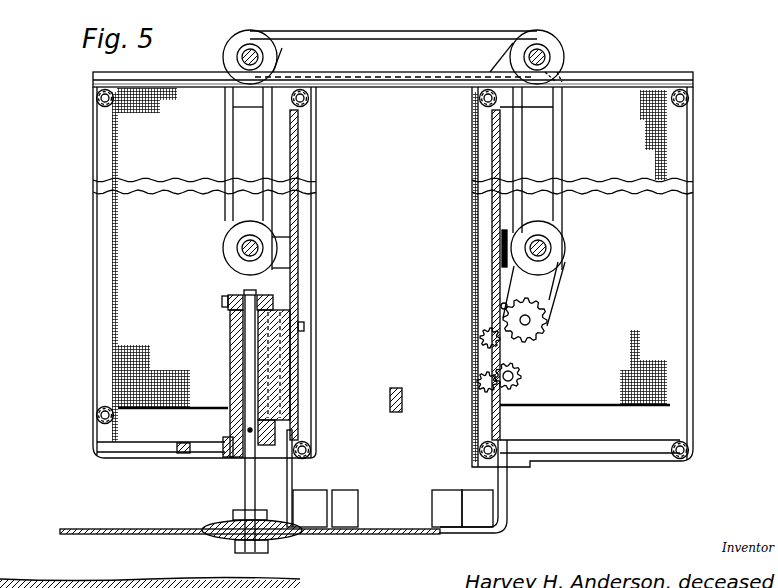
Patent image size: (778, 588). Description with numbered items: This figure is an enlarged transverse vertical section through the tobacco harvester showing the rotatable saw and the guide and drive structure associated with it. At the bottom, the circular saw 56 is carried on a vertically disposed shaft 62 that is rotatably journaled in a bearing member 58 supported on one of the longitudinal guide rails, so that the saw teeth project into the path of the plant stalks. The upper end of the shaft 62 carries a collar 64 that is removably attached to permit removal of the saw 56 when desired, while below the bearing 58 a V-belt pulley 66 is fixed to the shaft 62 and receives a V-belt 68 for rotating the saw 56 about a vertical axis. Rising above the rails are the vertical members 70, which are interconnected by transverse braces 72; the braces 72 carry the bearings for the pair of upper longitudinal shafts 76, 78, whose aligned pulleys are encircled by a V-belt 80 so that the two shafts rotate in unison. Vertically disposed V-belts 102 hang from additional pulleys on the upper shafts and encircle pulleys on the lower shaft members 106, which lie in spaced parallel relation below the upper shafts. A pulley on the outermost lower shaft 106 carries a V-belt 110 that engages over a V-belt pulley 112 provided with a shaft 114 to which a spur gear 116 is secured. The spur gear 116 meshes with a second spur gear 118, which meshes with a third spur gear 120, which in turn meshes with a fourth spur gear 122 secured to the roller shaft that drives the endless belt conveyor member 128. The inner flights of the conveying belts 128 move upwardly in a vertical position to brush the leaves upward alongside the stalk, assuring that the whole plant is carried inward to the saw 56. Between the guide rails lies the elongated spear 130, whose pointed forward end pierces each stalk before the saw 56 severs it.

The circular saw 56 is at (381, 534).
The bearing member 58 is at (237, 382).
The vertically disposed shaft 62 is at (247, 477).
The collar 64 is at (274, 299).
The V-belt pulley 66 is at (228, 458).
The V-belt 68 is at (190, 457).
The vertical members 70 is at (682, 289).
The transverse braces 72 is at (625, 77).
The longitudinal shaft 76 is at (252, 52).
The longitudinal shaft 78 is at (542, 50).
The V-belt 80 is at (402, 36).
The vertically disposed V-belts 102 is at (227, 154).
The lower shaft members 106 is at (547, 253).
The V-belt 110 is at (548, 296).
The V-belt pulley 112 is at (547, 320).
The shaft 114 is at (527, 326).
The spur gear 116 is at (502, 307).
The spur gear 118 is at (486, 338).
The third spur gear 120 is at (513, 372).
The fourth spur gear 122 is at (482, 386).
The endless belt conveyor member 128 is at (132, 289).
The elongated spear 130 is at (393, 414).